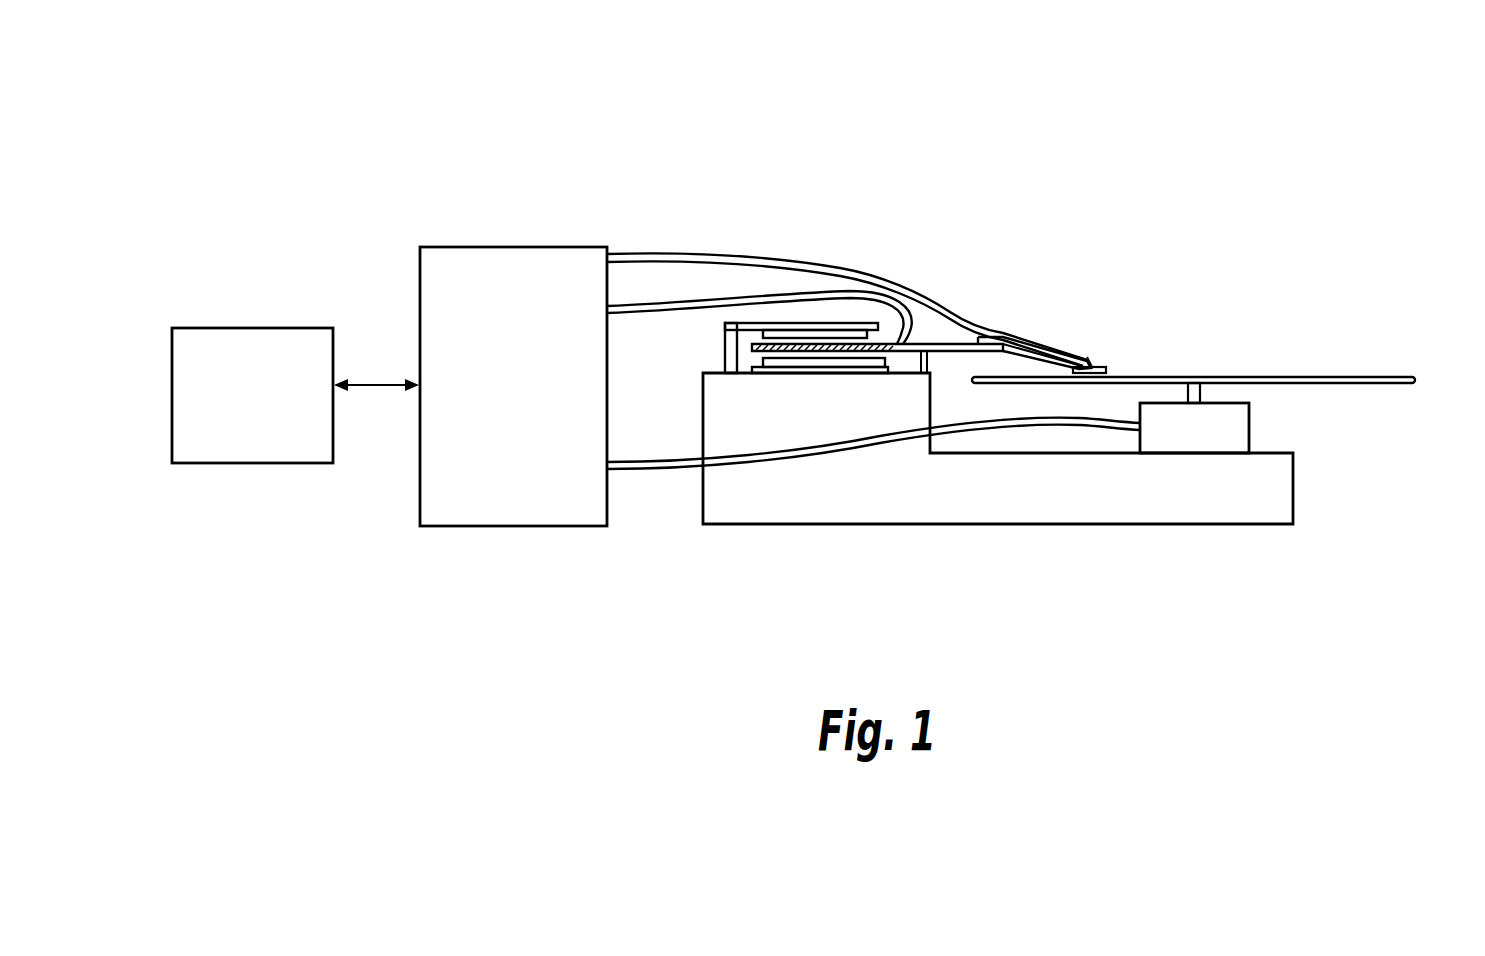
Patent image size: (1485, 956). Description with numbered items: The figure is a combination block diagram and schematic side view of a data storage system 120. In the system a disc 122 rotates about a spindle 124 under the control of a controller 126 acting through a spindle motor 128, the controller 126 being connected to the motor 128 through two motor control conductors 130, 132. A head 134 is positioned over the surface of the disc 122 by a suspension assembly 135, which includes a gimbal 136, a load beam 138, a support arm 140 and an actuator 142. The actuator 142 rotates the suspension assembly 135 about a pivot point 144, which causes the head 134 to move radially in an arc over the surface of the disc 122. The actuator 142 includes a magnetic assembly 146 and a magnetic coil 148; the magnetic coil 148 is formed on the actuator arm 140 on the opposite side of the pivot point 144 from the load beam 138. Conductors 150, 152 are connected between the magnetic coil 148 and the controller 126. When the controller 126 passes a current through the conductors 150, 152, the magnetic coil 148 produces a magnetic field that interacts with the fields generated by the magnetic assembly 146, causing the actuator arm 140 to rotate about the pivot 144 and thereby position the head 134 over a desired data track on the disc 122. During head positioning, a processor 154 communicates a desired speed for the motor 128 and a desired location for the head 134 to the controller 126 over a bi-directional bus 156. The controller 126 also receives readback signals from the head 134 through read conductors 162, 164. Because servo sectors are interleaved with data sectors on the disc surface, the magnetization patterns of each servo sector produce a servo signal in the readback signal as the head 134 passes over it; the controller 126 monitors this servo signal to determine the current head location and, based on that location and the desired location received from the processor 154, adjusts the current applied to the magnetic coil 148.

The data storage system 120 is at (985, 125).
The disc 122 is at (1393, 377).
The spindle 124 is at (1201, 391).
The controller 126 is at (511, 527).
The spindle motor 128 is at (1250, 430).
The motor control conductor 130 is at (651, 472).
The motor control conductor 132 is at (687, 470).
The head 134 is at (1107, 370).
The suspension assembly 135 is at (1090, 358).
The gimbal 136 is at (1099, 361).
The load beam 138 is at (1052, 330).
The support arm 140 is at (963, 325).
The actuator 142 is at (836, 316).
The pivot point 144 is at (927, 344).
The magnetic assembly 146 is at (716, 345).
The magnetic coil 148 is at (760, 357).
The conductor 150 is at (718, 304).
The conductor 152 is at (764, 307).
The processor 154 is at (290, 327).
The bi-directional bus 156 is at (370, 383).
The read conductor 162 is at (668, 255).
The read conductor 164 is at (632, 254).